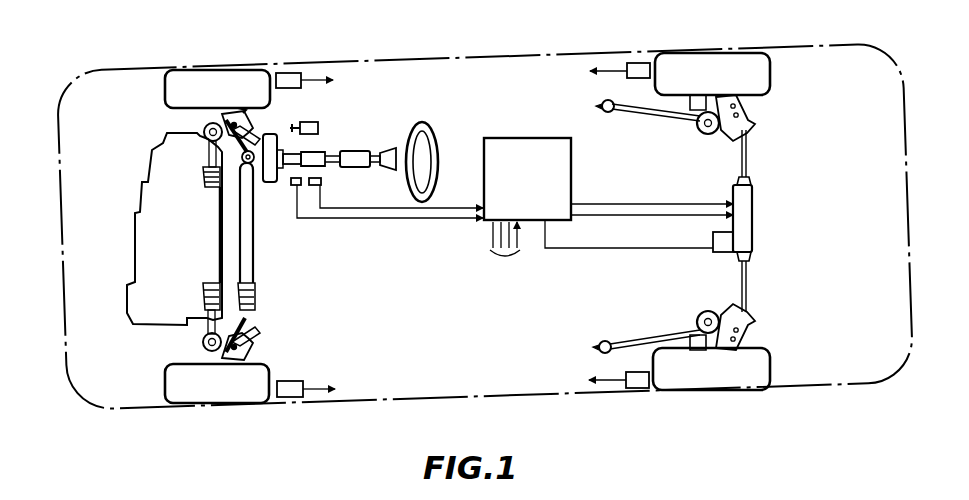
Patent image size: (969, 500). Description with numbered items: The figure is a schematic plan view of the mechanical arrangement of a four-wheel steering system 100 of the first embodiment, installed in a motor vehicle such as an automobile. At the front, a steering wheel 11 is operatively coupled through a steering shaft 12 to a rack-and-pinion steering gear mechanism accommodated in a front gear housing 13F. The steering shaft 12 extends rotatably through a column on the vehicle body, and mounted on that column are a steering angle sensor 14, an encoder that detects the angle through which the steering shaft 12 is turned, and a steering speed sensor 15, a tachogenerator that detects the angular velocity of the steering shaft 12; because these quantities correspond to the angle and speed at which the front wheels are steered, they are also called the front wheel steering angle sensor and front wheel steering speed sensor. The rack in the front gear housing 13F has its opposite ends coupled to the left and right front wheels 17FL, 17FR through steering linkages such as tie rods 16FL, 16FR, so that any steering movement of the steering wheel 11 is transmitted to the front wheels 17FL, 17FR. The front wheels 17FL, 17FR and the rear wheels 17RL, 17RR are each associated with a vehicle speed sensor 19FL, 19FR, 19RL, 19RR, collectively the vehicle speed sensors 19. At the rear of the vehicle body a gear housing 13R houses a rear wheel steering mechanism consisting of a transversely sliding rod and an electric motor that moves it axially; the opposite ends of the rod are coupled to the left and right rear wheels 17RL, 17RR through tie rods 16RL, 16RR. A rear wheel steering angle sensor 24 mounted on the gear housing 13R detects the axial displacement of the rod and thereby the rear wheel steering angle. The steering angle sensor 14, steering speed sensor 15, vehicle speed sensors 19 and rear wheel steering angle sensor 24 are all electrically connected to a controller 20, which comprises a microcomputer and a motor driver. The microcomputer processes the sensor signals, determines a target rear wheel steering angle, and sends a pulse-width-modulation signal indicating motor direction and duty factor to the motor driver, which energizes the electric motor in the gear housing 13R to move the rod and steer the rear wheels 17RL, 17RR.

The four-wheel steering system 100 is at (465, 322).
The steering wheel 11 is at (432, 126).
The steering shaft 12 is at (326, 153).
The front gear housing 13F is at (256, 268).
The gear housing 13R is at (748, 221).
The steering angle sensor 14 is at (323, 181).
The steering speed sensor 15 is at (292, 187).
The tie rod 16FR is at (248, 118).
The tie rod 16FL is at (256, 326).
The tie rod 16RR is at (748, 155).
The tie rod 16RL is at (748, 293).
The right front wheel 17FR is at (238, 88).
The left front wheel 17FL is at (226, 386).
The right rear wheel 17RR is at (725, 82).
The left rear wheel 17RL is at (727, 375).
The vehicle speed sensors 19 is at (506, 254).
The vehicle speed sensor 19FR is at (293, 73).
The vehicle speed sensor 19FL is at (296, 399).
The vehicle speed sensor 19RR is at (639, 64).
The vehicle speed sensor 19RL is at (639, 389).
The controller 20 is at (548, 192).
The rear wheel steering angle sensor 24 is at (720, 253).